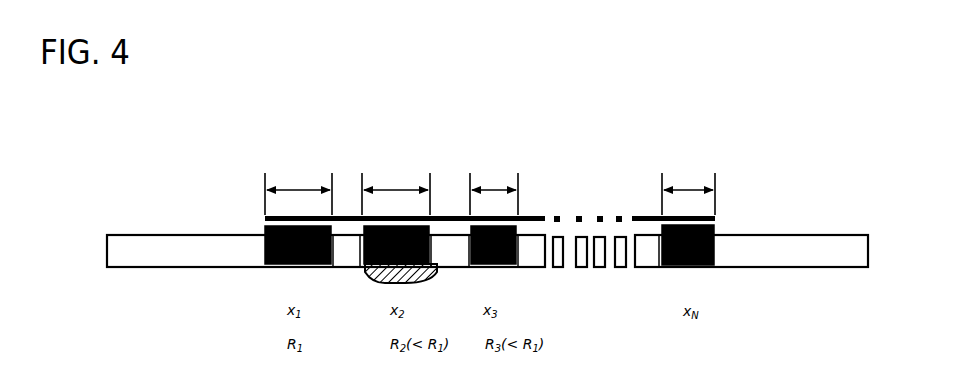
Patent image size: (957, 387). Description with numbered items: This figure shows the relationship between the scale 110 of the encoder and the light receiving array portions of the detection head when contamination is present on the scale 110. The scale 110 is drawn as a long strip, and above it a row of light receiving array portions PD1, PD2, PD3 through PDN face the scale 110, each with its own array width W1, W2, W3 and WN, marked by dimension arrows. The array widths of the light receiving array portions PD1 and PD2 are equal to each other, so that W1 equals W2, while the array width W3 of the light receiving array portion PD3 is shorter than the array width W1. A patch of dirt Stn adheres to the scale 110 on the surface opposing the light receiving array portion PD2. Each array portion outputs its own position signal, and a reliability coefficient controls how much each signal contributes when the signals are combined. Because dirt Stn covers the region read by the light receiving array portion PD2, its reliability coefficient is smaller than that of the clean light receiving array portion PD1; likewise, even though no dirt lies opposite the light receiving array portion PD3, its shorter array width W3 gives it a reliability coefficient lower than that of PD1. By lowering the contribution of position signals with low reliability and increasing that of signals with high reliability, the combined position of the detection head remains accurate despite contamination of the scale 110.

The scale 110 is at (214, 240).
The light receiving array portion PD1 is at (298, 245).
The light receiving array portion PD2 is at (396, 245).
The light receiving array portion PD3 is at (493, 245).
The light receiving array portion PDN is at (688, 245).
The array width W1 is at (298, 190).
The array width W2 is at (396, 190).
The array width W3 is at (494, 190).
The array width WN is at (688, 190).
The dirt Stn is at (408, 281).